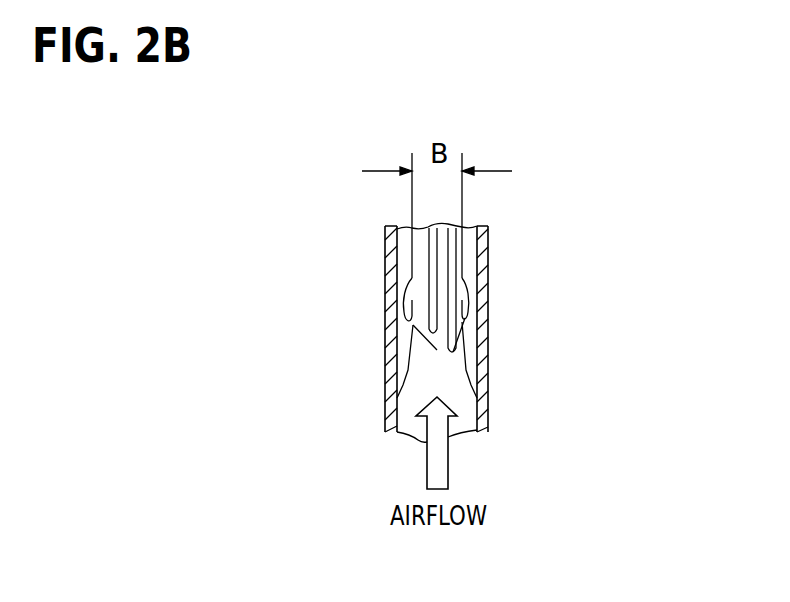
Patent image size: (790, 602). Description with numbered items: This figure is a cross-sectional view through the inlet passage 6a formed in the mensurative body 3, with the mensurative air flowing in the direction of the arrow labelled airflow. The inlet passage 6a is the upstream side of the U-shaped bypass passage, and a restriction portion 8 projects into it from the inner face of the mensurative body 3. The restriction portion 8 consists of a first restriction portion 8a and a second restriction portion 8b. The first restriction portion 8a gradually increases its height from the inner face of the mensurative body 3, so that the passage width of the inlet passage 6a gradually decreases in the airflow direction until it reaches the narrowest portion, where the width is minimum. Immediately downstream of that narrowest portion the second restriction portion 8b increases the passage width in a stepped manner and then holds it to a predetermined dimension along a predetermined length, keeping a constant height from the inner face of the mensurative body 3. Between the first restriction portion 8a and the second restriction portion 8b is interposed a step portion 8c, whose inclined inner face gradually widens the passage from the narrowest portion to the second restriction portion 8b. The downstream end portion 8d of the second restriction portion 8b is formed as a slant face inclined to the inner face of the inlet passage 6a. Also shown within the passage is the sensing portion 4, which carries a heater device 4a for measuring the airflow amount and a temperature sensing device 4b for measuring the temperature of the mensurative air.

The mensurative body 3 is at (488, 240).
The sensing portion 4 is at (371, 365).
The heater device 4a is at (420, 330).
The temperature sensing device 4b is at (412, 356).
The inlet passage 6a is at (443, 382).
The restriction portion 8 is at (461, 297).
The first restriction portion 8a is at (460, 348).
The second restriction portion 8b is at (467, 303).
The step portion 8c is at (404, 299).
The downstream end portion 8d is at (470, 274).